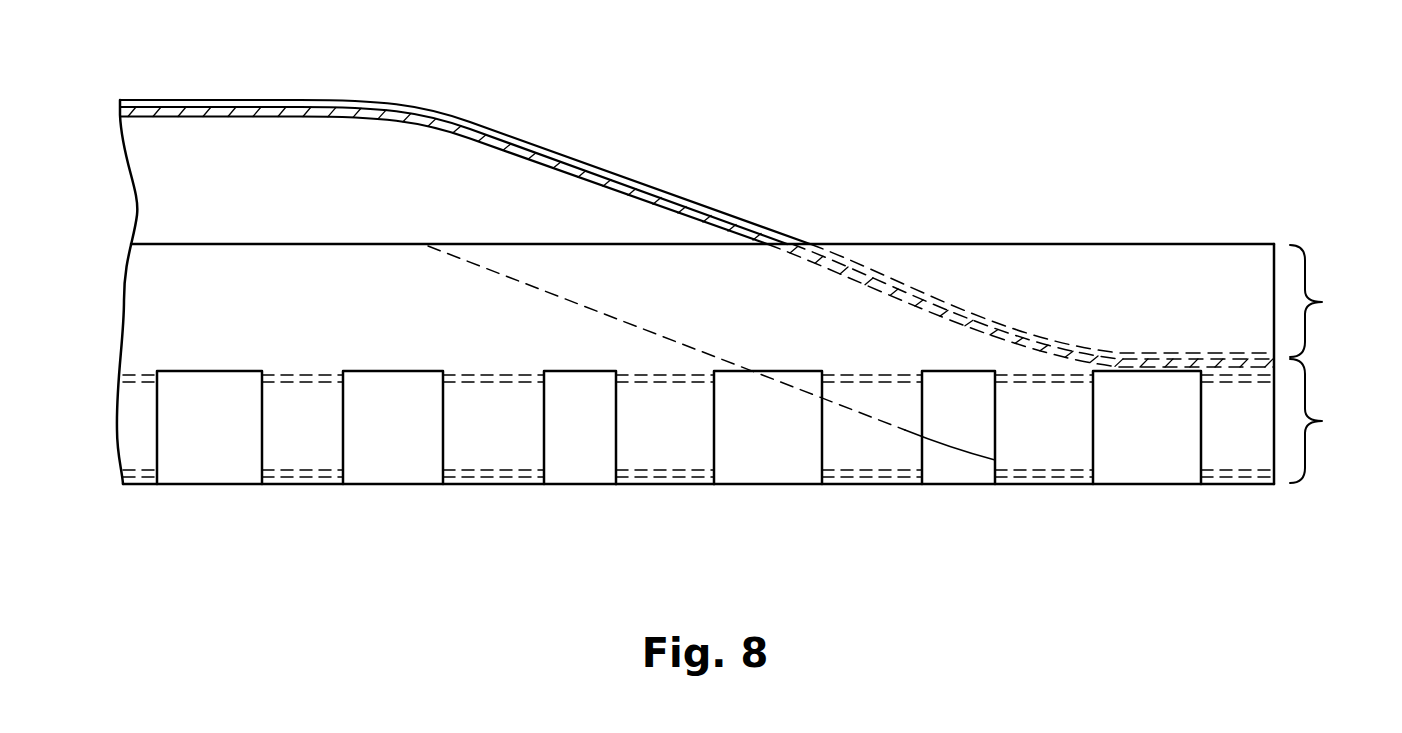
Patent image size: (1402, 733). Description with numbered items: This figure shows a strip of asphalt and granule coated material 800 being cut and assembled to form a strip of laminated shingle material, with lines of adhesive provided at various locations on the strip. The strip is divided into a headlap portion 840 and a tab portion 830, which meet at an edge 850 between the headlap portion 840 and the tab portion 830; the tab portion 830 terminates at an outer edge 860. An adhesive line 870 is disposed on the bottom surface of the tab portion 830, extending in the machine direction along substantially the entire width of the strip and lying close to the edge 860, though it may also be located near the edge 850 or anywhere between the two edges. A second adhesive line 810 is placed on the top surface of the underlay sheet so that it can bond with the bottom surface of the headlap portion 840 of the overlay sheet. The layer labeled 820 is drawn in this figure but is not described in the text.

The strip of asphalt and granule coated material 800 is at (774, 104).
The adhesive line 810 is at (877, 286).
The upper bonding layer 820 is at (105, 385).
The tab portion 830 is at (750, 421).
The headlap portion 840 is at (754, 352).
The edge between the headlap portion and tab portion 850 is at (178, 363).
The edge of the tab portion 860 is at (663, 485).
The adhesive line 870 is at (132, 492).